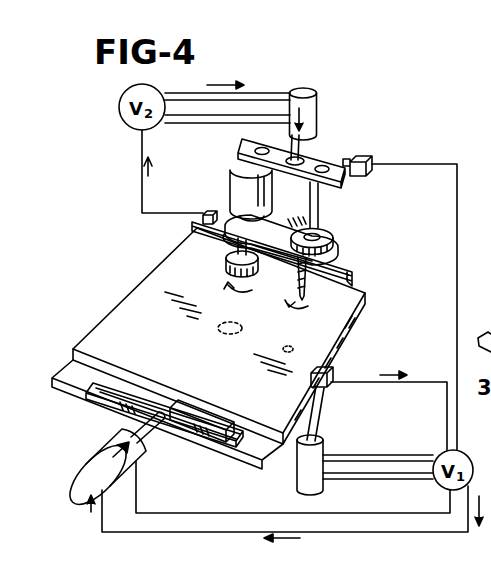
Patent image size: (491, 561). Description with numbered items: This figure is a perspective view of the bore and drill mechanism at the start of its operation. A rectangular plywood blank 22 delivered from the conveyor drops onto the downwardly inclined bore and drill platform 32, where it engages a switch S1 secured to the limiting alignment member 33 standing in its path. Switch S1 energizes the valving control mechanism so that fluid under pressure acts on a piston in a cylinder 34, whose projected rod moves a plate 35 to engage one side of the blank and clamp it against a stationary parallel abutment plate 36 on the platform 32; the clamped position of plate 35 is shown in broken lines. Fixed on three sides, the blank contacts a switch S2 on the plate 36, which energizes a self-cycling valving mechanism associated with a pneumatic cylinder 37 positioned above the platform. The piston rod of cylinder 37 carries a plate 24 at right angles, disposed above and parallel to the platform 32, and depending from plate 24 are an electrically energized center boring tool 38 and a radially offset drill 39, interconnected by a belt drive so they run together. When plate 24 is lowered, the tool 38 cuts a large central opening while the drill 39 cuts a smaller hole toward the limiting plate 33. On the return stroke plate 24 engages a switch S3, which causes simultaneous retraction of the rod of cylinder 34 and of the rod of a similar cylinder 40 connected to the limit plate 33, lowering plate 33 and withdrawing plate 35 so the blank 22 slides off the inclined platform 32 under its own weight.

The plywood blank 22 is at (153, 274).
The plate 24 is at (312, 163).
The bore and drill platform 32 is at (192, 455).
The limiting alignment member 33 is at (354, 329).
The cylinder 34 is at (104, 449).
The plate 35 is at (92, 393).
The stationary parallel abutment plate 36 is at (348, 272).
The pneumatic cylinder 37 is at (311, 95).
The center boring tool 38 is at (230, 184).
The drill 39 is at (322, 208).
The cylinder 40 is at (296, 476).
The switch S1 is at (327, 385).
The switch S2 is at (208, 215).
The switch S3 is at (365, 156).